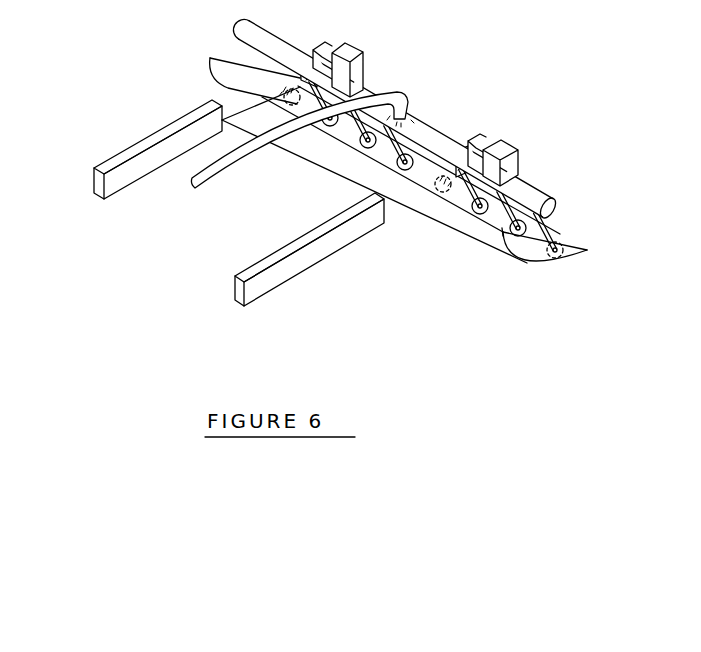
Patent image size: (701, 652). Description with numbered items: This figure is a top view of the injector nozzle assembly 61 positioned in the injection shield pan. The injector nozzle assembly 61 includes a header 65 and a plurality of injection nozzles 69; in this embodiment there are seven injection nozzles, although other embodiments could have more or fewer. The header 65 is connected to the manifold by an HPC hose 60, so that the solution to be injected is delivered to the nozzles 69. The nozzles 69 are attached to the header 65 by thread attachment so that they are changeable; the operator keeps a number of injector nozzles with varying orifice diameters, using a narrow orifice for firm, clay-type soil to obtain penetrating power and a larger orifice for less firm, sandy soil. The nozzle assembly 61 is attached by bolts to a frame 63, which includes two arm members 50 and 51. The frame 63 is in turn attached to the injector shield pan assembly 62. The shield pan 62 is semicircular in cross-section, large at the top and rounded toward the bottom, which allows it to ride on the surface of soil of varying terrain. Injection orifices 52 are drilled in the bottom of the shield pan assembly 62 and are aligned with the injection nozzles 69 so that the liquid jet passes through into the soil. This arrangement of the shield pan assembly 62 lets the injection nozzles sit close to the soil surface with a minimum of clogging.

The arm member 50 is at (299, 284).
The arm member 51 is at (128, 151).
The injection orifices 52 is at (479, 224).
The HPC hose 60 is at (207, 183).
The injector nozzle assembly 61 is at (411, 102).
The injector shield pan assembly 62 is at (525, 265).
The frame 63 is at (218, 203).
The header 65 is at (536, 183).
The injection nozzles 69 is at (550, 222).